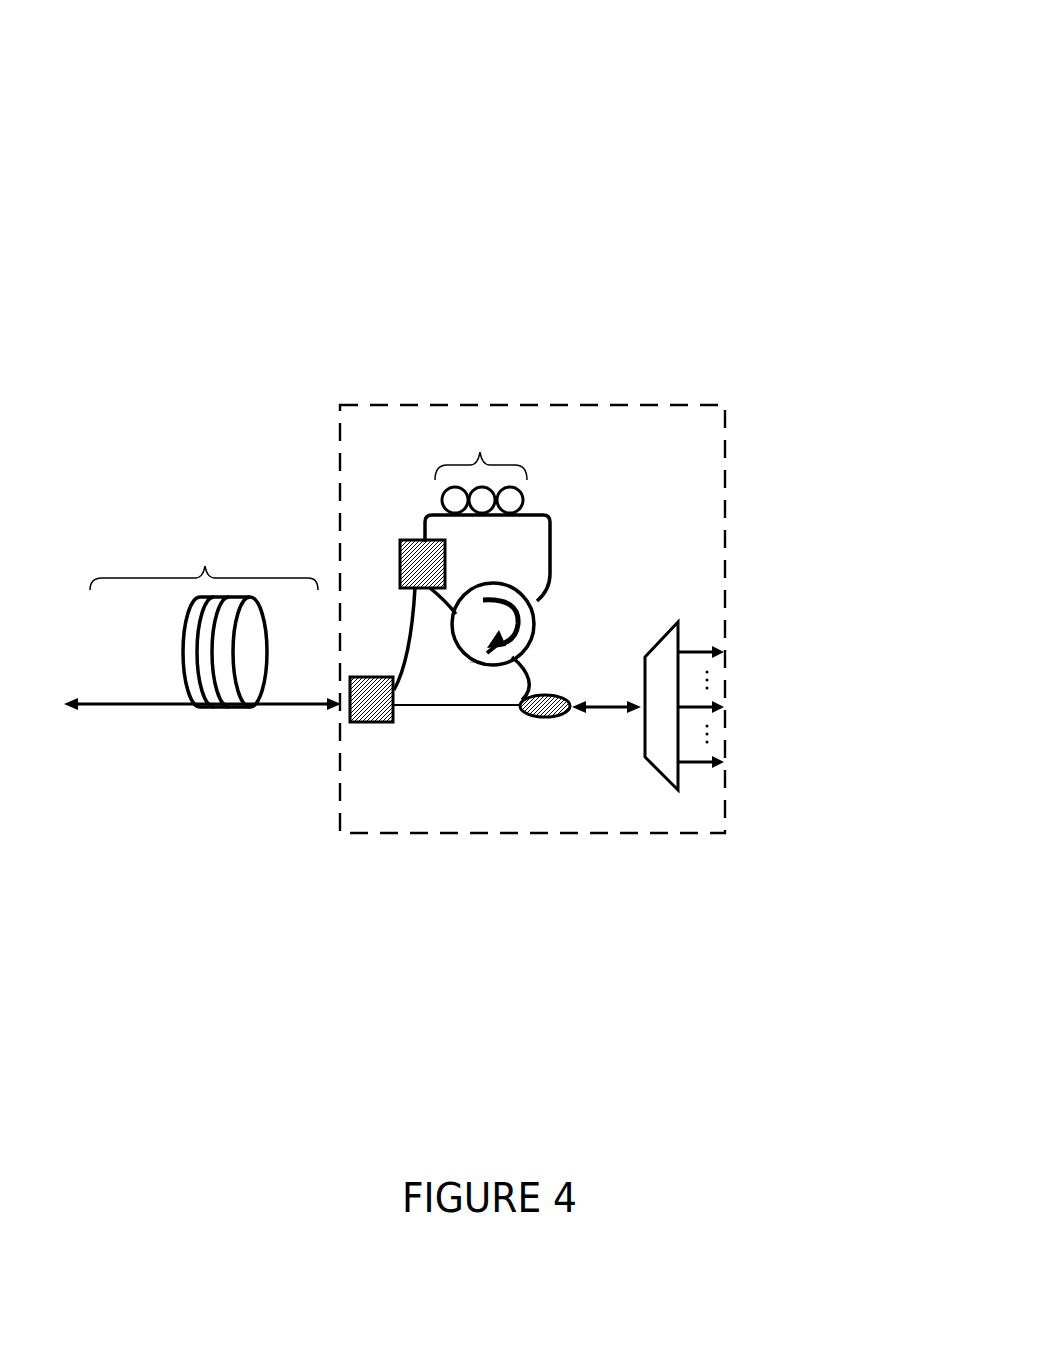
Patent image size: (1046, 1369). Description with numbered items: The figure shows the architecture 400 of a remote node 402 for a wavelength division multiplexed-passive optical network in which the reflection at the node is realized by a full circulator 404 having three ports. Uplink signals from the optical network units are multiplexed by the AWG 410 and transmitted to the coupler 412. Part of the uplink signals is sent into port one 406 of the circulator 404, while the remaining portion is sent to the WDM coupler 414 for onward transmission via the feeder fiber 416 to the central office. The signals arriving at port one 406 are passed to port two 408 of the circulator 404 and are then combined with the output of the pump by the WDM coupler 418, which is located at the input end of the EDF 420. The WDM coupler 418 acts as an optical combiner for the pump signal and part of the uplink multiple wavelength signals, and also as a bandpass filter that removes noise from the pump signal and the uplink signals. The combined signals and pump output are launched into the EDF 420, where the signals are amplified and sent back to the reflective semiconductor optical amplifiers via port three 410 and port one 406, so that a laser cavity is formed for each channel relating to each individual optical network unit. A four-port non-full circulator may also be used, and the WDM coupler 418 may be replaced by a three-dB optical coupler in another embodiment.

The architecture 400 is at (341, 160).
The remote node 402 is at (603, 405).
The circulator 404 is at (477, 661).
The port one 406 is at (510, 661).
The port two 408 is at (456, 614).
The AWG / port three 410 is at (534, 613).
The coupler 412 is at (545, 717).
The WDM coupler 414 is at (370, 722).
The feeder fiber 416 is at (202, 617).
The WDM coupler 418 is at (403, 541).
The EDF 420 is at (478, 450).